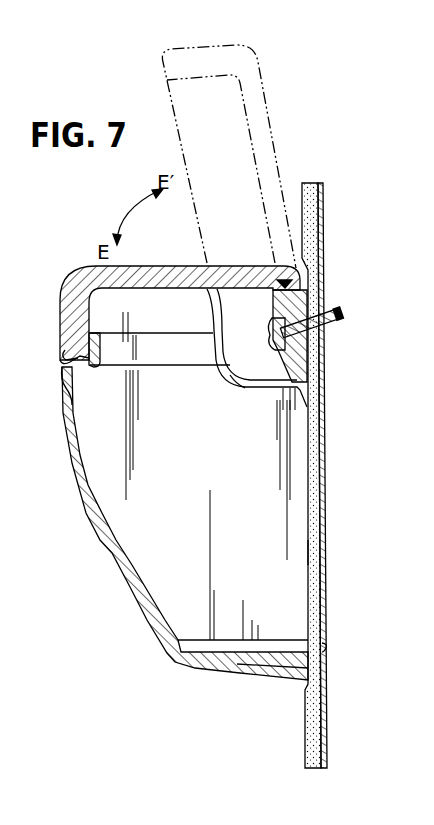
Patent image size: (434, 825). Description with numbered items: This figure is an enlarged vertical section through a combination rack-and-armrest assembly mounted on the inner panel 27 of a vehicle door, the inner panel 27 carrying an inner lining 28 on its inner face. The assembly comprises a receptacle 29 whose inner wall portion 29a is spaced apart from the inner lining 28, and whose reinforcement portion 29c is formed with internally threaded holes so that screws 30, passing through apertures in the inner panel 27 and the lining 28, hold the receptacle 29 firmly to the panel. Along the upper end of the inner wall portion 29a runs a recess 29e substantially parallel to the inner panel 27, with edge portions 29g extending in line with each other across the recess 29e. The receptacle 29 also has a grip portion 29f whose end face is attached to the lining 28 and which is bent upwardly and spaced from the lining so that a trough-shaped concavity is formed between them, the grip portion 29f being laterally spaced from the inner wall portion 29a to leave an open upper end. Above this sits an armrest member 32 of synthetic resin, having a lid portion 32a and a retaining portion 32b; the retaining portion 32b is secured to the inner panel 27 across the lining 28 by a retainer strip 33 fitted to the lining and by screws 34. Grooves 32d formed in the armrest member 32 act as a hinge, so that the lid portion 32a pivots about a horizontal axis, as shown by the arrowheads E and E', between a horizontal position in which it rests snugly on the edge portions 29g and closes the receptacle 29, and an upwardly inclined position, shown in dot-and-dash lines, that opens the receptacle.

The inner panel 27 is at (322, 440).
The inner lining 28 is at (308, 553).
The receptacle 29 is at (161, 521).
The inner wall portion 29a is at (98, 528).
The reinforcement portion 29c is at (257, 640).
The recess 29e is at (78, 368).
The grip portion 29f is at (235, 382).
The edge portions 29g is at (67, 353).
The screws 30 is at (327, 650).
The armrest member 32 is at (205, 321).
The lid portion 32a is at (137, 289).
The retaining portion 32b is at (322, 296).
The grooves 32d is at (282, 283).
The retainer strip 33 is at (283, 356).
The screws 34 is at (338, 326).